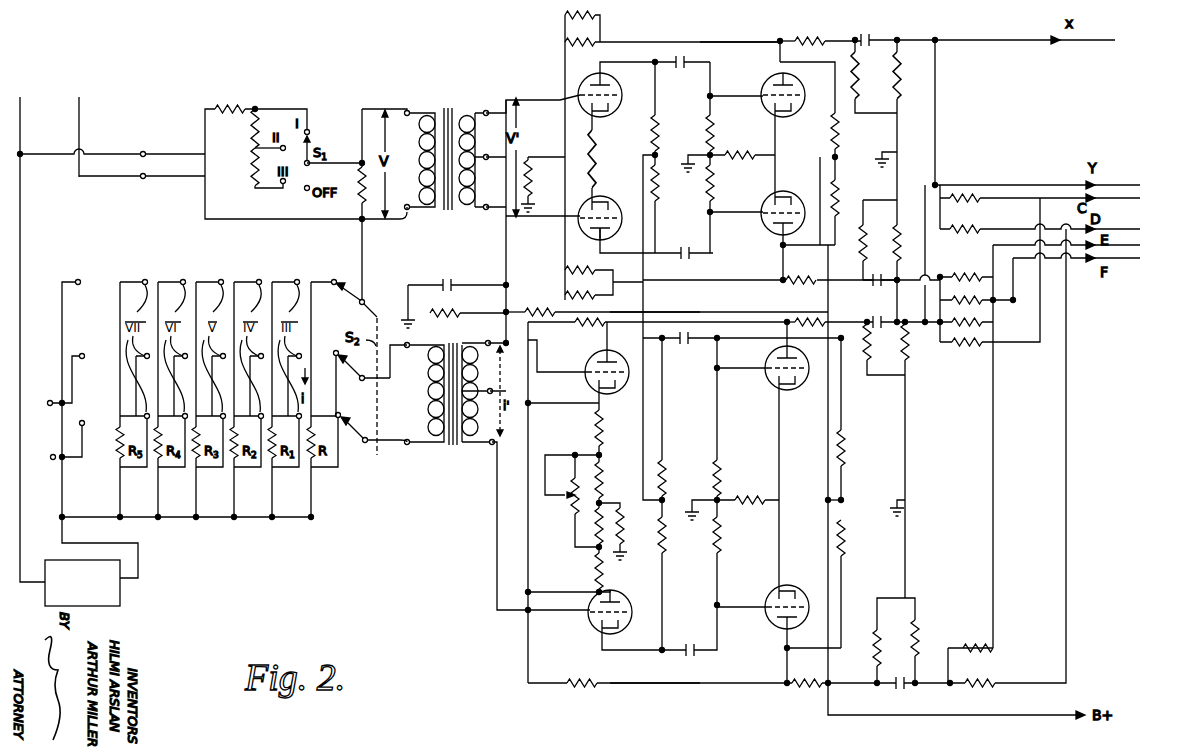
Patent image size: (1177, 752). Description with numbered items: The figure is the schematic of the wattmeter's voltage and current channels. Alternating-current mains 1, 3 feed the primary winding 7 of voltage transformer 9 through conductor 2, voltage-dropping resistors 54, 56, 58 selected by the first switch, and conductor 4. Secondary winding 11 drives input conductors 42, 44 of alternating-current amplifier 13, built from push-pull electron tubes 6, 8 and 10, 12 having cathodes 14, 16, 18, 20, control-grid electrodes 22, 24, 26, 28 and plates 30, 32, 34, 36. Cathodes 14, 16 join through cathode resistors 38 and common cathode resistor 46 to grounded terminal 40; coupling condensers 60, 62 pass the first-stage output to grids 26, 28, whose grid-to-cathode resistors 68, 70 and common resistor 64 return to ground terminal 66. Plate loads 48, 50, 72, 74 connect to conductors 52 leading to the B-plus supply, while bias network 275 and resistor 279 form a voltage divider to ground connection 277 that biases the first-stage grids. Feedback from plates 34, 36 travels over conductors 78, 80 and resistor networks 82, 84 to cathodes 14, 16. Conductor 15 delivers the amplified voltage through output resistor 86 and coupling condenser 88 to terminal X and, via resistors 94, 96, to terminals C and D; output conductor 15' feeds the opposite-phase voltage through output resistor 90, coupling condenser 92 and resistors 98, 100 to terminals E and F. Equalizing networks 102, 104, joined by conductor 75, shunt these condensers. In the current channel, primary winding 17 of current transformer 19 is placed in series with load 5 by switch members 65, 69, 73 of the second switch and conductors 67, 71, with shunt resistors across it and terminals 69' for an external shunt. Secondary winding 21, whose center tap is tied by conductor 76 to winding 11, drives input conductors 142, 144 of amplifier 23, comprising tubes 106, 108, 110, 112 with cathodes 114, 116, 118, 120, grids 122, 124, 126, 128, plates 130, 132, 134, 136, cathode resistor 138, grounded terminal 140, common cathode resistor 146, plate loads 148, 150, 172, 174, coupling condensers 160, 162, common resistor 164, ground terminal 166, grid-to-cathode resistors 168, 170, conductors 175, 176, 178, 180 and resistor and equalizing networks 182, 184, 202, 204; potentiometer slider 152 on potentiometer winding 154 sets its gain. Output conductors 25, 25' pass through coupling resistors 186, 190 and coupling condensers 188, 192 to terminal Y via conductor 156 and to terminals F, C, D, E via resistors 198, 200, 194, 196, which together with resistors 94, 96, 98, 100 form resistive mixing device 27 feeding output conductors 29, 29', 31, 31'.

The mains 1 is at (20, 130).
The conductor 2 is at (130, 150).
The mains conductor 3 is at (79, 120).
The conductor 4 is at (407, 222).
The load 5 is at (110, 608).
The electron tube 6 is at (598, 72).
The primary winding 7 is at (430, 110).
The electron tube 8 is at (573, 236).
The voltage transformer 9 is at (450, 106).
The electron tube 10 is at (806, 86).
The secondary winding 11 is at (482, 112).
The electron tube 12 is at (808, 220).
The alternating-current amplifier 13 is at (760, 27).
The cathode 14 is at (612, 116).
The conductor 15 is at (786, 35).
The output conductor 15' is at (849, 294).
The cathode 16 is at (612, 203).
The primary winding 17 is at (428, 416).
The cathode 18 is at (790, 115).
The current transformer 19 is at (453, 449).
The cathode 20 is at (784, 192).
The secondary winding 21 is at (481, 444).
The control-grid electrode 22 is at (622, 78).
The alternating-current amplifier 23 is at (750, 714).
The control-grid electrode 24 is at (616, 232).
The output conductor 25 is at (848, 313).
The output conductor 25' is at (854, 702).
The control-grid electrode 26 is at (762, 92).
The resistive mixing device 27 is at (952, 268).
The control-grid electrode 28 is at (764, 222).
The output conductor 29 is at (1144, 180).
The output conductor 29' is at (1150, 238).
The plate 30 is at (566, 78).
The output conductor 31 is at (1143, 216).
The output conductor 31' is at (1153, 270).
The plate 32 is at (600, 236).
The plate 34 is at (780, 76).
The plate 36 is at (776, 248).
The cathode resistors 38 is at (590, 145).
The grounded terminal 40 is at (529, 194).
The input conductor 42 is at (518, 96).
The input conductor 44 is at (528, 210).
The common cathode resistor 46 is at (529, 172).
The plate load 48 is at (658, 125).
The plate load 50 is at (658, 198).
The conductors 52 is at (984, 716).
The resistor 54 is at (250, 108).
The resistor 56 is at (253, 137).
The resistor 58 is at (254, 172).
The coupling condenser 60 is at (685, 67).
The coupling condenser 62 is at (690, 257).
The common resistor 64 is at (764, 153).
The switch member 65 is at (348, 462).
The ground terminal 66 is at (688, 174).
The conductor 67 is at (285, 518).
The grid-to-cathode resistor 68 is at (706, 119).
The switch member 69 is at (349, 379).
The terminals 69' is at (59, 399).
The grid-to-cathode resistor 70 is at (722, 180).
The conductor 71 is at (310, 326).
The plate load 72 is at (839, 132).
The switch member 73 is at (362, 290).
The plate load 74 is at (842, 192).
The conductor 75 is at (897, 144).
The conductor 76 is at (506, 250).
The conductor 78 is at (676, 41).
The conductor 80 is at (696, 289).
The resistor network 82 is at (600, 16).
The resistor network 84 is at (562, 279).
The output resistor 86 is at (824, 39).
The coupling condenser 88 is at (868, 37).
The output resistor 90 is at (785, 289).
The coupling condenser 92 is at (885, 285).
The resistor 94 is at (966, 202).
The resistor 96 is at (989, 224).
The resistor 98 is at (988, 274).
The resistor 100 is at (986, 283).
The equalizing network 102 is at (860, 94).
The equalizing network 104 is at (880, 219).
The push-pull amplifier stage 106 is at (611, 332).
The push-pull amplifier stage 108 is at (602, 640).
The push-pull amplifier 110 is at (766, 374).
The push-pull amplifier 112 is at (768, 620).
The cathode 114 is at (605, 396).
The cathode 116 is at (612, 602).
The cathode 118 is at (782, 391).
The cathode 120 is at (787, 594).
The control-grid electrode 122 is at (585, 374).
The control-grid electrode 124 is at (627, 620).
The control-grid electrode 126 is at (787, 346).
The control-grid electrode 128 is at (798, 625).
The plate 130 is at (594, 370).
The plate 132 is at (610, 641).
The plate 134 is at (770, 364).
The plate 136 is at (786, 646).
The cathode resistor 138 is at (604, 560).
The grounded terminal 140 is at (628, 550).
The input conductor 142 is at (579, 396).
The input conductor 144 is at (556, 612).
The common cathode resistor 146 is at (626, 514).
The plate load 148 is at (662, 468).
The plate load 150 is at (673, 558).
The potentiometer slider 152 is at (564, 500).
The potentiometer winding 154 is at (572, 492).
The conductor 156 is at (963, 184).
The coupling condenser 160 is at (690, 340).
The coupling condenser 162 is at (699, 653).
The common resistor 164 is at (751, 498).
The ground terminal 166 is at (696, 526).
The grid-to-cathode resistor 168 is at (714, 459).
The grid-to-cathode resistor 170 is at (722, 544).
The plate load 172 is at (845, 451).
The plate load 174 is at (842, 542).
The conductor 175 is at (913, 494).
The conductor 176 is at (841, 500).
The conductor 178 is at (677, 330).
The conductor 180 is at (690, 688).
The resistor network 182 is at (582, 324).
The resistor network 184 is at (588, 690).
The coupling resistor 186 is at (812, 313).
The coupling condenser 188 is at (882, 315).
The coupling resistor 190 is at (824, 696).
The coupling condenser 192 is at (885, 687).
The resistor 194 is at (998, 690).
The resistor 196 is at (966, 646).
The resistor 198 is at (952, 346).
The resistor 200 is at (970, 352).
The equalizing network 202 is at (886, 459).
The equalizing network 204 is at (896, 642).
The bias network 275 is at (436, 282).
The ground connection 277 is at (418, 326).
The resistor 279 is at (554, 308).